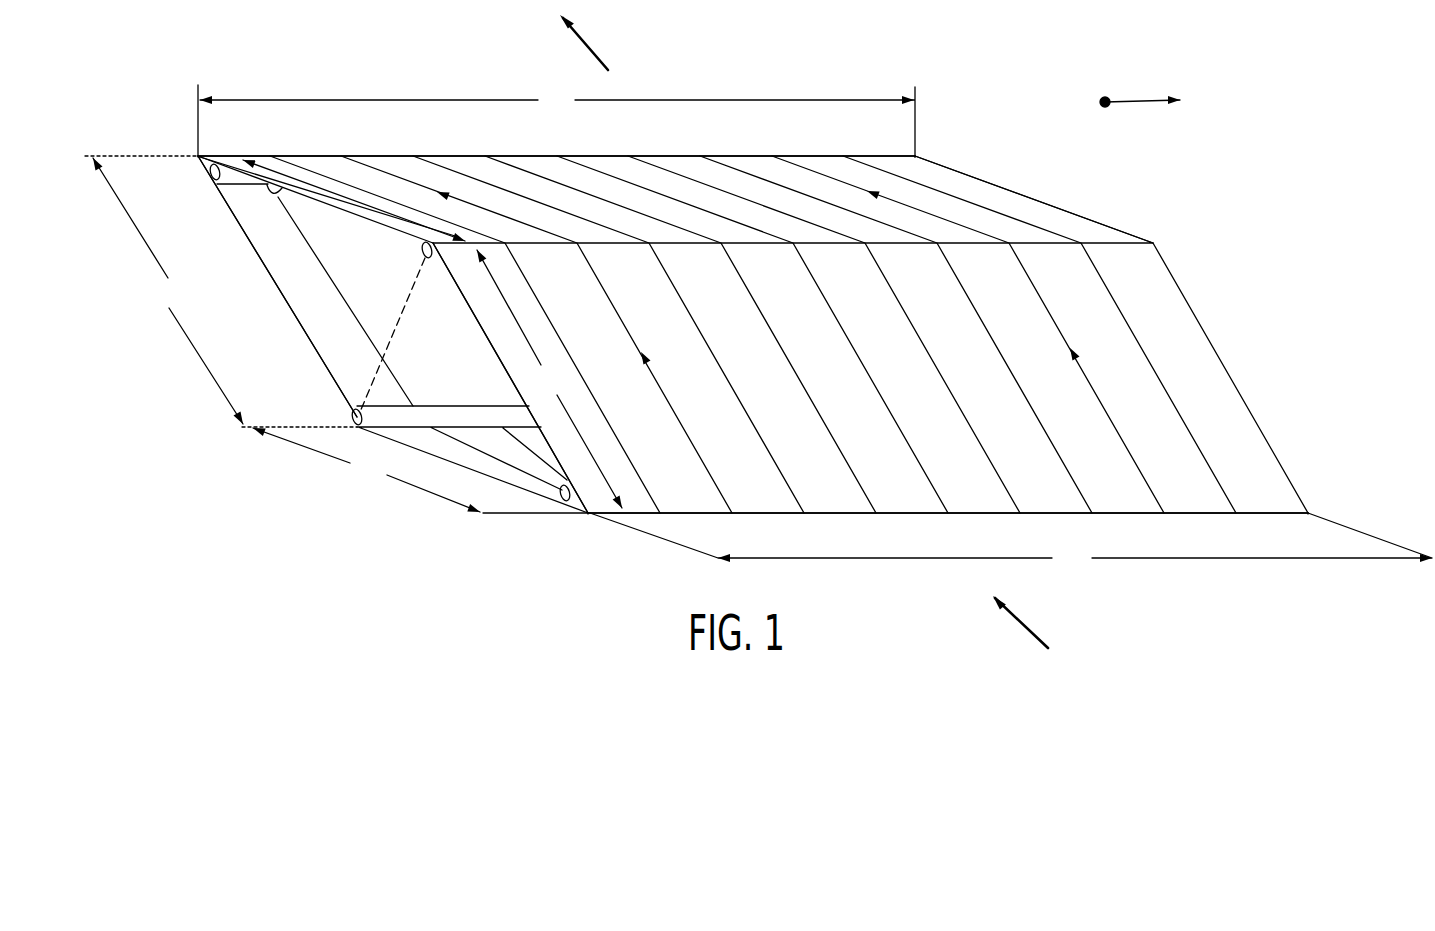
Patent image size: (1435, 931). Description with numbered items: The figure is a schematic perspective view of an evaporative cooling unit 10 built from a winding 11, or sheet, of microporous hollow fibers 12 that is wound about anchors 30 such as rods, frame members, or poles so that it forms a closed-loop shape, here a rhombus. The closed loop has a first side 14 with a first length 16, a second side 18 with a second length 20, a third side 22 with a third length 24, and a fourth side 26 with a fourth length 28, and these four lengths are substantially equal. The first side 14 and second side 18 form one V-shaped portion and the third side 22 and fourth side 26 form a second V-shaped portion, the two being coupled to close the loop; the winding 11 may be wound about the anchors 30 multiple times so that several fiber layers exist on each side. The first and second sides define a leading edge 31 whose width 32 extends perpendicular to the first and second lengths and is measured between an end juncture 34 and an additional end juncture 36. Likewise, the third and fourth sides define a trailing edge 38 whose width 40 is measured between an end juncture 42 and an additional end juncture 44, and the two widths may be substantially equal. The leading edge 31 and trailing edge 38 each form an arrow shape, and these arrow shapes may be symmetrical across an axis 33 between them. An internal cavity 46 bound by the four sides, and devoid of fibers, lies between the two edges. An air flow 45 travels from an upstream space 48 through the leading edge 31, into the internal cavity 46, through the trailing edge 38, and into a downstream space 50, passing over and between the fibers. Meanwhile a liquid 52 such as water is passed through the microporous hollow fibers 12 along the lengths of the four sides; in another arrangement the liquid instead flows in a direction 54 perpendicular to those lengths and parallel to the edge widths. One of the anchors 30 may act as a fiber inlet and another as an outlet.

The evaporative cooling unit 10 is at (988, 150).
The winding 11 is at (645, 180).
The microporous hollow fibers 12 is at (780, 467).
The first side 14 is at (476, 464).
The first length 16 is at (361, 469).
The second side 18 is at (560, 457).
The second length 20 is at (549, 379).
The third side 22 is at (262, 184).
The third length 24 is at (340, 192).
The fourth side 26 is at (252, 245).
The fourth length 28 is at (164, 290).
The anchors 30 is at (210, 177).
The leading edge 31 is at (886, 516).
The width 32 is at (1011, 544).
The axis 33 is at (400, 305).
The end juncture 34 is at (587, 516).
The additional end juncture 36 is at (1310, 513).
The trailing edge 38 is at (380, 153).
The width 40 is at (556, 121).
The end juncture 42 is at (198, 156).
The additional end juncture 44 is at (918, 155).
The air flow 45 is at (590, 48).
The internal cavity 46 is at (340, 306).
The upstream space 48 is at (932, 644).
The downstream space 50 is at (503, 39).
The liquid 52 is at (462, 200).
The direction 54 is at (1146, 96).